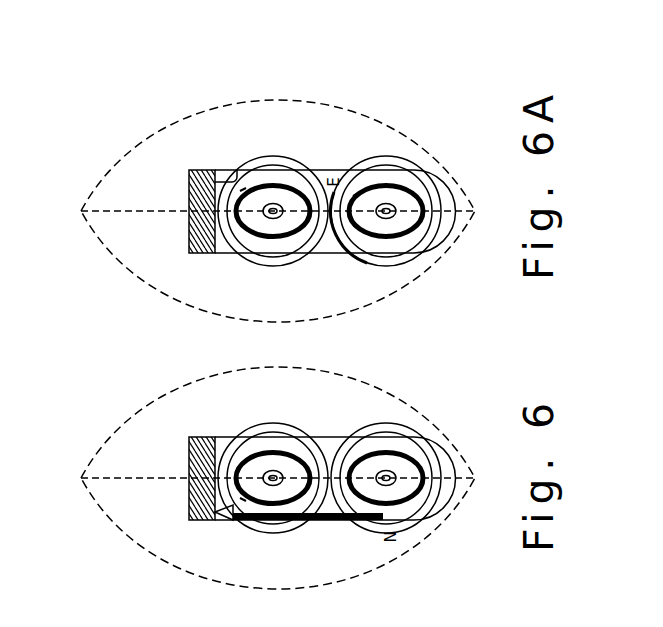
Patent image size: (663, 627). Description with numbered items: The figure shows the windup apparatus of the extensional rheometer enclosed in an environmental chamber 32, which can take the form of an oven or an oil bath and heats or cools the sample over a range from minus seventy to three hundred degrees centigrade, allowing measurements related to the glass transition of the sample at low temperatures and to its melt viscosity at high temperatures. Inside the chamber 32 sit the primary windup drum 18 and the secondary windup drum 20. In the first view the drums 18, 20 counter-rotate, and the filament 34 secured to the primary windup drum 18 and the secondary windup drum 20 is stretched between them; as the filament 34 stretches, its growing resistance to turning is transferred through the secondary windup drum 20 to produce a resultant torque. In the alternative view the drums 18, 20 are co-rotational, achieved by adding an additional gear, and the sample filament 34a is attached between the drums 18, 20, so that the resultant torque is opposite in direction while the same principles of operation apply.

In FIG. 6A, the primary windup drum 18 is at (247, 178).
In FIG. 6, the primary windup drum 18 is at (258, 461).
In FIG. 6A, the secondary windup drum 20 is at (393, 173).
In FIG. 6, the secondary windup drum 20 is at (369, 463).
In FIG. 6A, the environmental chamber 32 is at (116, 165).
In FIG. 6, the environmental chamber 32 is at (268, 438).
In FIG. 6, the filament 34 is at (299, 545).
In FIG. 6A, the sample filament 34a is at (340, 238).